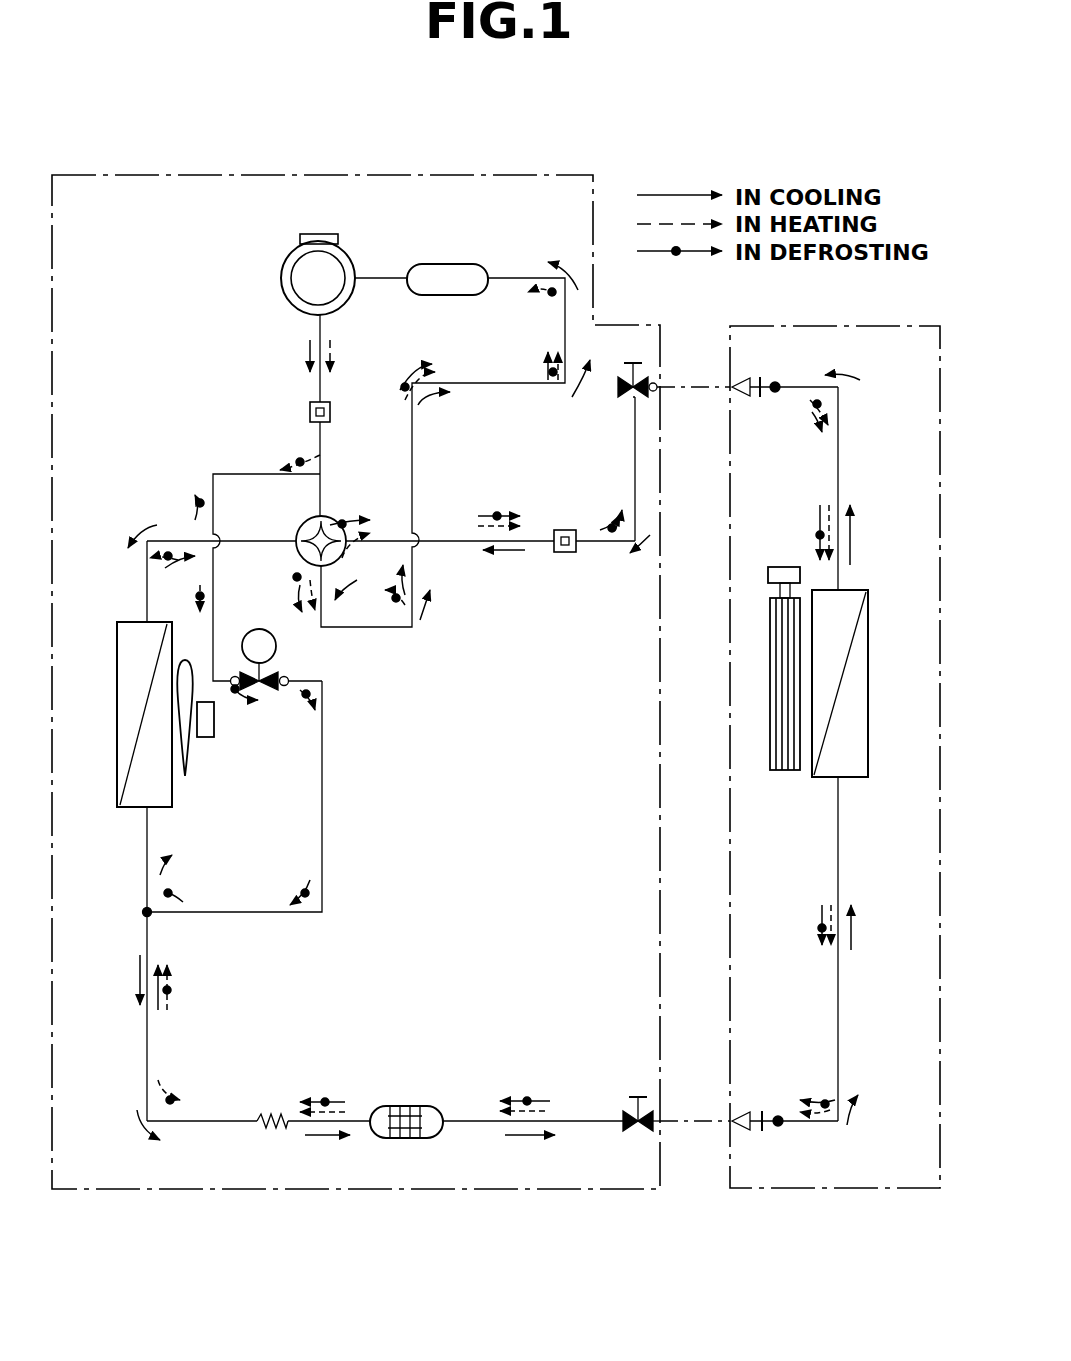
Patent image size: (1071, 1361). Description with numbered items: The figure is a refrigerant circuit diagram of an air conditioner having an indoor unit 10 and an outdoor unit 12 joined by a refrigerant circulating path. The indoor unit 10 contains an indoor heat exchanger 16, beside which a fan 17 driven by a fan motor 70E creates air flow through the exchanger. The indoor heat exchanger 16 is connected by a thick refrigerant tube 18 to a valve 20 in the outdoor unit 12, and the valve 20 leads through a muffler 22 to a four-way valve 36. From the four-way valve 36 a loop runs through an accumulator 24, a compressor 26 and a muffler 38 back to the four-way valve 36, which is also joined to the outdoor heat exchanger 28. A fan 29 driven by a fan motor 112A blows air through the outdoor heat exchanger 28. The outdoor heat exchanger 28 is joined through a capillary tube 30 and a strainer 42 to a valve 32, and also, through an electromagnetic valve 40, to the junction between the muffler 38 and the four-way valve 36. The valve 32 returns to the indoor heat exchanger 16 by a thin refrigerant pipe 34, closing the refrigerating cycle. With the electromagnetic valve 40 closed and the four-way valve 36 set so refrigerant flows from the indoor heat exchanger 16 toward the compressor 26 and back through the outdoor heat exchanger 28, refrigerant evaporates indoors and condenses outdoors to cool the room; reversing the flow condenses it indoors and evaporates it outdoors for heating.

The indoor unit 10 is at (760, 1190).
The outdoor unit 12 is at (360, 1192).
The indoor heat exchanger 16 is at (828, 779).
The fan 17 is at (786, 772).
The refrigerant tube 18 is at (682, 390).
The valve 20 is at (625, 400).
The muffler 22 is at (565, 529).
The accumulator 24 is at (428, 296).
The compressor 26 is at (282, 268).
The outdoor heat exchanger 28 is at (165, 809).
The fan 29 is at (188, 777).
The capillary tube 30 is at (270, 1126).
The valve 32 is at (624, 1114).
The refrigerant pipe 34 is at (693, 1124).
The four-way valve 36 is at (346, 546).
The muffler 38 is at (331, 412).
The electromagnetic valve 40 is at (258, 692).
The strainer 42 is at (445, 1112).
The fan motor 70E is at (782, 567).
The fan motor 112A is at (213, 737).